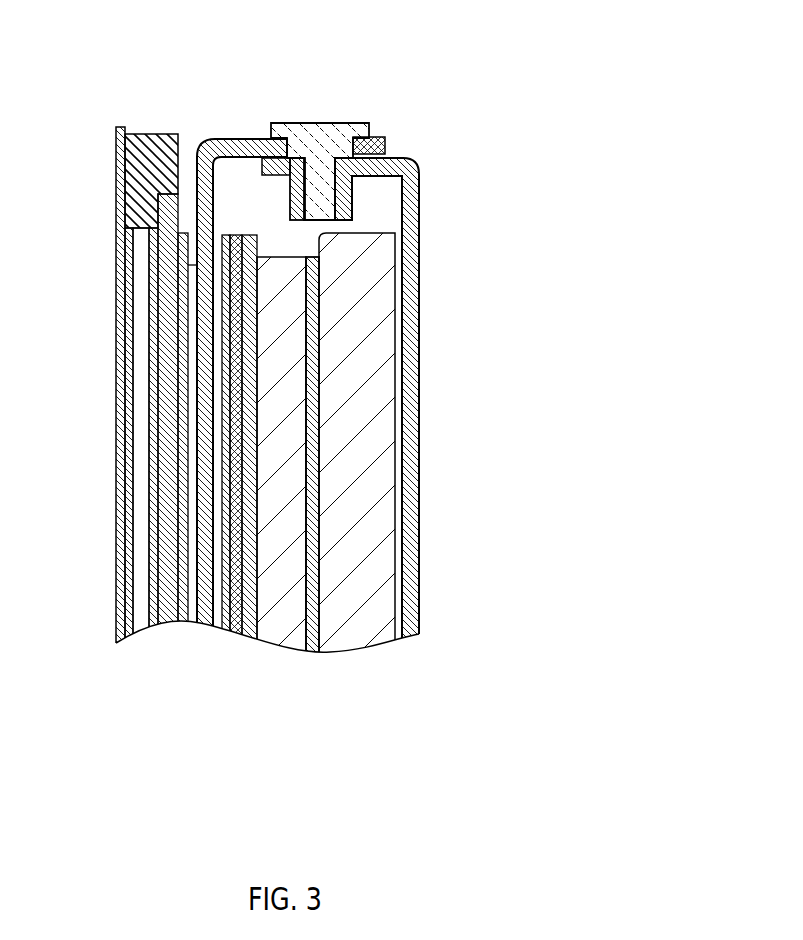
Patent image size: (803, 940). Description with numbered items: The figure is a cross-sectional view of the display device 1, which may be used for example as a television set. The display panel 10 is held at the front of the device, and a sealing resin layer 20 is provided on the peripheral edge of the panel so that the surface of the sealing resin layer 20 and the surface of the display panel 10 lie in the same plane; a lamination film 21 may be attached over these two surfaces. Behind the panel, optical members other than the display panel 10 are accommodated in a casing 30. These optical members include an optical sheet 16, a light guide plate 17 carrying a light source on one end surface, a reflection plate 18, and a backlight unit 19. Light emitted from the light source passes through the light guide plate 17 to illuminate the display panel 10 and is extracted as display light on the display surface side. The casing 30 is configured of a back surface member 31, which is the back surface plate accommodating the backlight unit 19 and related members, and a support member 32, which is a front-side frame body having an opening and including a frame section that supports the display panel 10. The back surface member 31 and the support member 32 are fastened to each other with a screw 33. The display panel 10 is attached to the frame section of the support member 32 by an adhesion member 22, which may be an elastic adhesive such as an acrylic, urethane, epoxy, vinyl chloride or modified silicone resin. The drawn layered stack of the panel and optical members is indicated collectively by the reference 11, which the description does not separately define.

The display device 1 is at (533, 68).
The display panel 10 is at (158, 771).
The positive electrode 11 is at (127, 645).
The optical sheet 16 is at (225, 645).
The light guide plate 17 is at (283, 415).
The reflection plate 18 is at (310, 472).
The backlight unit 19 is at (355, 531).
The sealing resin layer 20 is at (165, 146).
The lamination film 21 is at (117, 388).
The adhesion member 22 is at (193, 265).
The casing 30 is at (482, 125).
The back surface member 31 is at (418, 178).
The support member 32 is at (387, 143).
The screw 33 is at (321, 122).